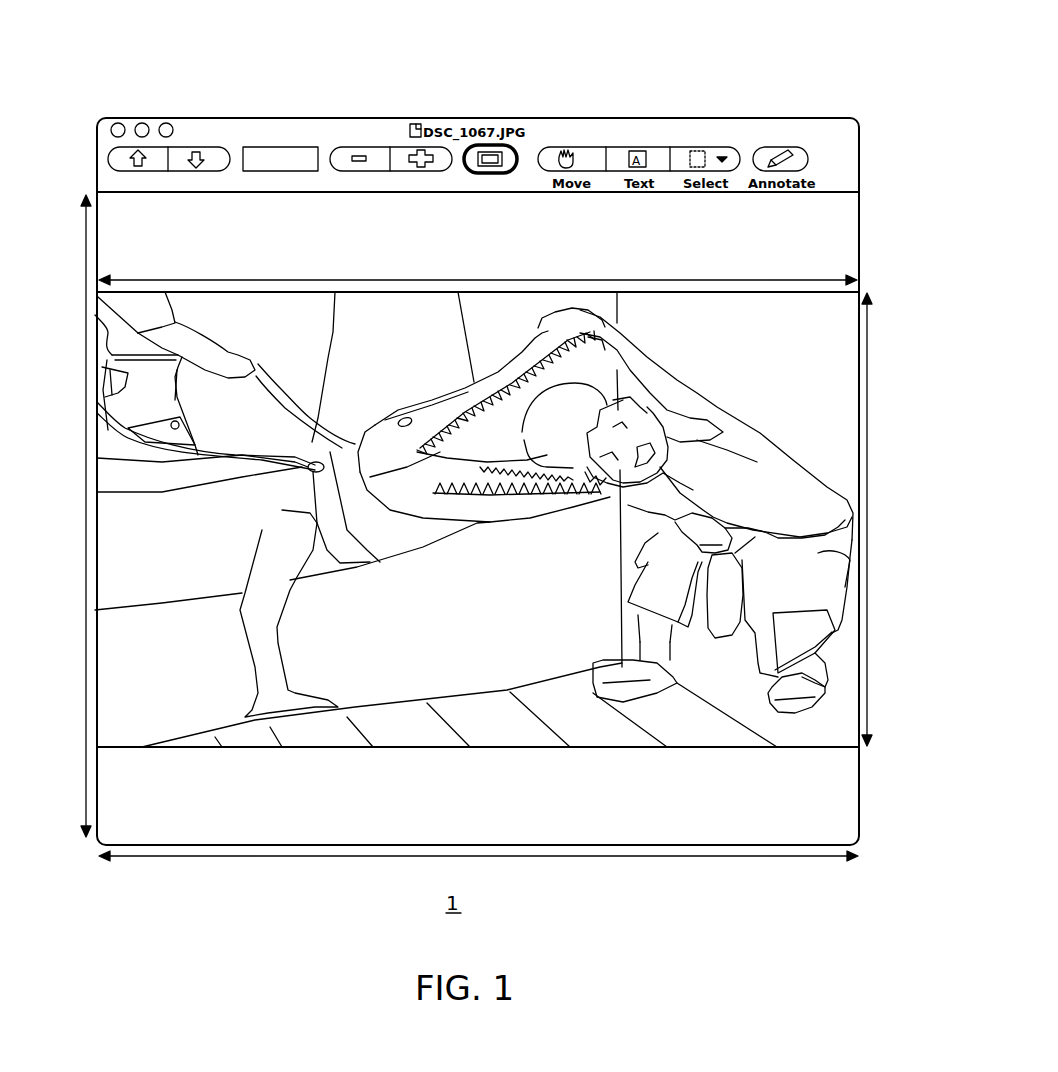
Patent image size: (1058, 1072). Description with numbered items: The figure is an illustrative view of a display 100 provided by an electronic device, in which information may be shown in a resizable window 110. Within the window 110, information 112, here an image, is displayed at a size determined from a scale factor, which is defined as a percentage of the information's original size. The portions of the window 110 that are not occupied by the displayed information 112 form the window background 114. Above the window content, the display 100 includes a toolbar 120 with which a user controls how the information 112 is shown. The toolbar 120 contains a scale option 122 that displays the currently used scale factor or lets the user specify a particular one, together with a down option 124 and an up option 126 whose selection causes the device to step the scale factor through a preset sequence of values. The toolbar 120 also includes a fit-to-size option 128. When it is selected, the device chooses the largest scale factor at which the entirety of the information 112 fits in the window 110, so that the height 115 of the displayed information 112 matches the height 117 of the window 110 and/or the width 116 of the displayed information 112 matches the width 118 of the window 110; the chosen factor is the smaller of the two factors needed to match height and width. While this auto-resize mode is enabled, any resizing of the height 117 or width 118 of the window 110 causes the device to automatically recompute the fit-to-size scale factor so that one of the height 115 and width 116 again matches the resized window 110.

The display 100 is at (590, 52).
The window 110 is at (838, 803).
The information 112 is at (818, 549).
The window background 114 is at (822, 246).
The height of displayed information 115 is at (867, 400).
The width of displayed information 116 is at (470, 272).
The height of window 117 is at (86, 530).
The width of window 118 is at (356, 857).
The toolbar 120 is at (806, 128).
The scale option 122 is at (284, 147).
The down option 124 is at (371, 150).
The up option 126 is at (401, 150).
The fit-to-size option 128 is at (520, 143).